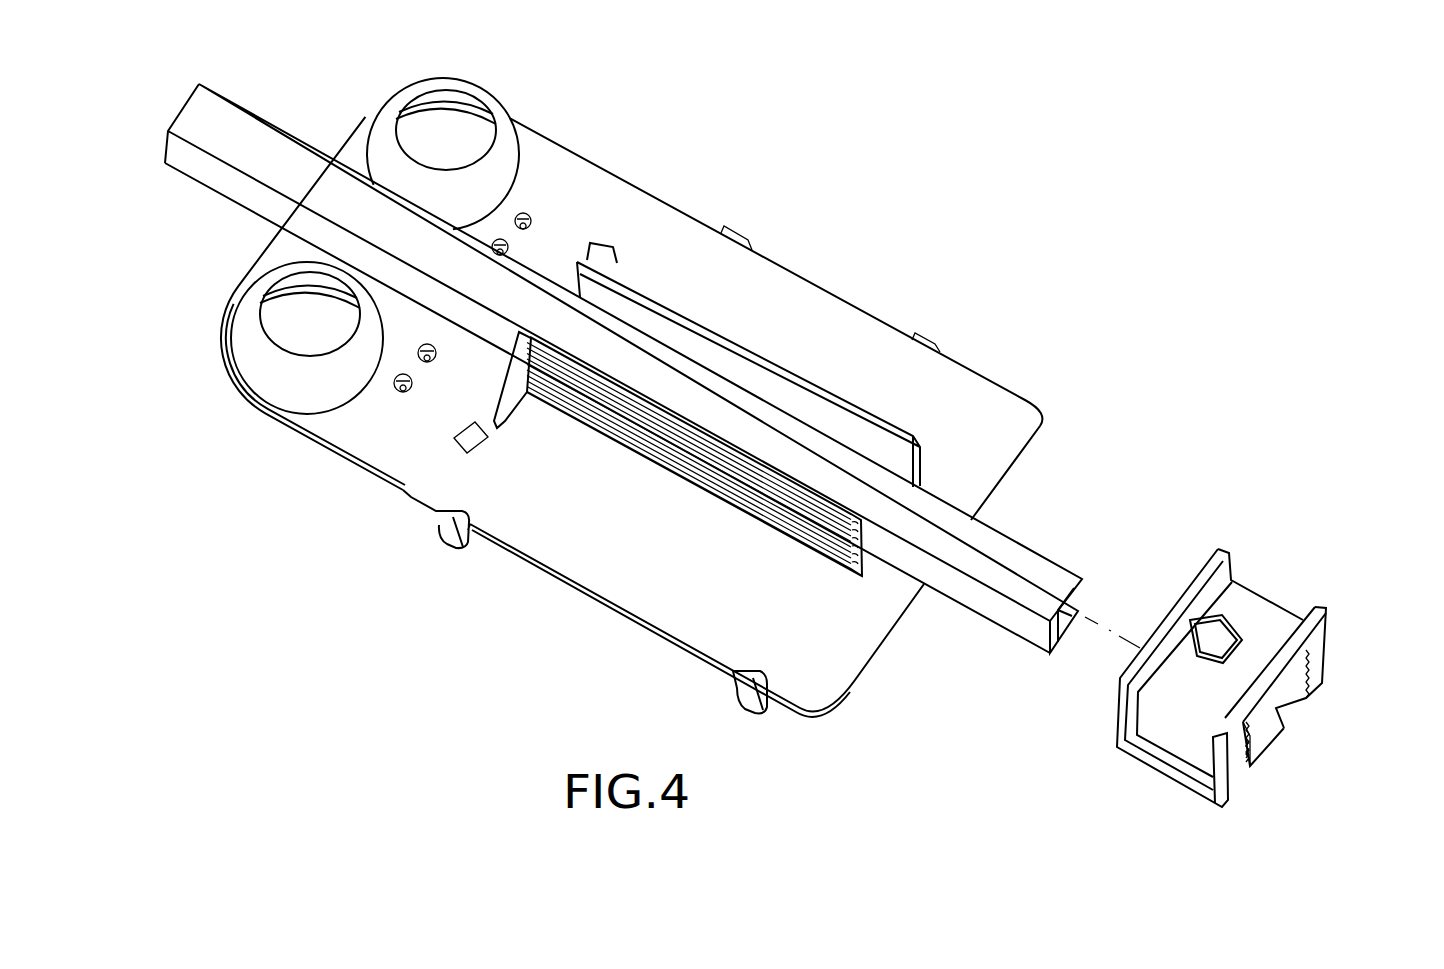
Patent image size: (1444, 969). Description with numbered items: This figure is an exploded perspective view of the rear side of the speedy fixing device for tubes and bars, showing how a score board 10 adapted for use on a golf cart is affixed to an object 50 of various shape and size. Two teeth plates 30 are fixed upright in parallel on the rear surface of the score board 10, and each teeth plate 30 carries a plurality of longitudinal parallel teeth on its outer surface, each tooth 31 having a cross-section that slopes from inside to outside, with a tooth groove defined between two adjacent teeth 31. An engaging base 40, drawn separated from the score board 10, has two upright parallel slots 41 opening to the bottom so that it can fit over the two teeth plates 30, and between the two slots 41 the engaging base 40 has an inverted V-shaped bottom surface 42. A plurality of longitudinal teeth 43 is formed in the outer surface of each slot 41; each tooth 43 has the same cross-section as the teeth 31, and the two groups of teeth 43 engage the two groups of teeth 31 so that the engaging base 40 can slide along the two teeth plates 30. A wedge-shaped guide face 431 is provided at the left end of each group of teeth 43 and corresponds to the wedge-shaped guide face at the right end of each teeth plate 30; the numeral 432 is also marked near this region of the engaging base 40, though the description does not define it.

The score board 10 is at (788, 297).
The teeth plate 30 is at (857, 513).
The tooth 31 is at (853, 562).
The engaging base 40 is at (1429, 597).
The slot 41 is at (1262, 702).
The inverted V-shaped bottom surface 42 is at (1281, 712).
The tooth 43 is at (1308, 665).
The wedge-shaped guide face 431 is at (1250, 750).
The contact tooth 432 is at (1247, 767).
The object 50 is at (1010, 560).